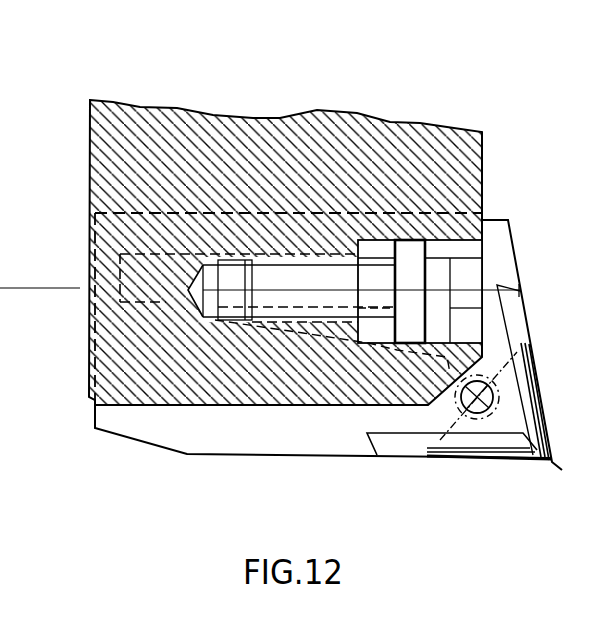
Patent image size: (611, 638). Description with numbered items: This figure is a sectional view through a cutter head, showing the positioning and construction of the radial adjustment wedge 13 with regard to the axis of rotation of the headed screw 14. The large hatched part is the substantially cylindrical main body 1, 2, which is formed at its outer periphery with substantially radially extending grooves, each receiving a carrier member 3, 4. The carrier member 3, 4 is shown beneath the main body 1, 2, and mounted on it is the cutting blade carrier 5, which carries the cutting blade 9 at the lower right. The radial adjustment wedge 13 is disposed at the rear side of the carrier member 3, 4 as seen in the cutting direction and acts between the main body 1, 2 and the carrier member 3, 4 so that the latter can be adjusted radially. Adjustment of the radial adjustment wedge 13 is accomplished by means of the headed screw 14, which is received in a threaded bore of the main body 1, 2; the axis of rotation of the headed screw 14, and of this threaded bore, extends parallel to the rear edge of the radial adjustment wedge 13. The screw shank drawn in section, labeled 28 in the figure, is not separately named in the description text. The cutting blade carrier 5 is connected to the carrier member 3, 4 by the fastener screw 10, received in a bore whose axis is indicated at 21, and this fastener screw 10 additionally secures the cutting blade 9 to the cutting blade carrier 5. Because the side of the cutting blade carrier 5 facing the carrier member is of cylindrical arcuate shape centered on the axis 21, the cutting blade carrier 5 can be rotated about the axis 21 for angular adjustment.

The main body 1 is at (285, 222).
The main body 2 is at (167, 140).
The carrier member 3 is at (323, 459).
The carrier member 4 is at (386, 485).
The cutting blade carrier 5 is at (393, 442).
The cutting blade 9 is at (533, 459).
The fastener screw 10 is at (495, 392).
The radial adjustment wedge 13 is at (165, 277).
The headed screw 14 is at (412, 272).
The axis 21 is at (477, 414).
The clamping bolt 28 is at (270, 258).